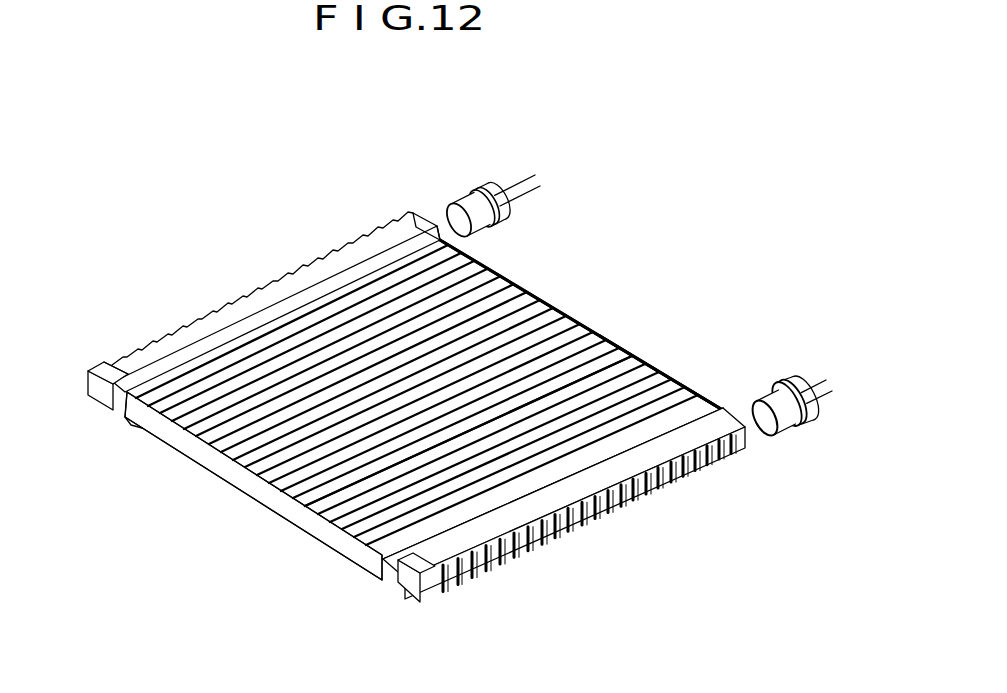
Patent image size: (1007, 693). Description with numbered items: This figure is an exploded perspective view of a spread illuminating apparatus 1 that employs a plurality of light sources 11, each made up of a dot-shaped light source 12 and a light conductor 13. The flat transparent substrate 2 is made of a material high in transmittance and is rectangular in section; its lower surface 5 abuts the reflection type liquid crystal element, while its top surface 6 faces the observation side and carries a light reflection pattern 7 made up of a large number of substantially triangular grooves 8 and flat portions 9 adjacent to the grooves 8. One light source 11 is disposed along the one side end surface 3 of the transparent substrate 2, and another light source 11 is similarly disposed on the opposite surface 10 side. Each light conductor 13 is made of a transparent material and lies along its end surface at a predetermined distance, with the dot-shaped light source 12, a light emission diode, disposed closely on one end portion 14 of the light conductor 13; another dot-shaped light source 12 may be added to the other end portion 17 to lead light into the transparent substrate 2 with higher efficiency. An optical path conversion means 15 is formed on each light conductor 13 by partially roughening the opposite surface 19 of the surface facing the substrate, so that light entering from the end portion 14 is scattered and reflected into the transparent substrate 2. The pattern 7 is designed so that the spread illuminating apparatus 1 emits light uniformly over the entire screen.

The spread illuminating apparatus 1 is at (117, 449).
The transparent substrate 2 is at (238, 483).
The one side end surface 3 is at (142, 430).
The lower surface 5 is at (290, 523).
The top surface 6 is at (536, 307).
The light reflection pattern 7 is at (767, 248).
The grooves 8 is at (693, 393).
The flat portions 9 is at (590, 327).
The opposite surface 10 is at (443, 533).
The light source 11 is at (470, 152).
The dot-shaped light source 12 is at (470, 202).
The light conductor 13 is at (356, 257).
The one end portion 14 is at (463, 242).
The optical path conversion means 15 is at (243, 296).
The other end portion 17 is at (80, 372).
The opposite surface 19 is at (110, 358).